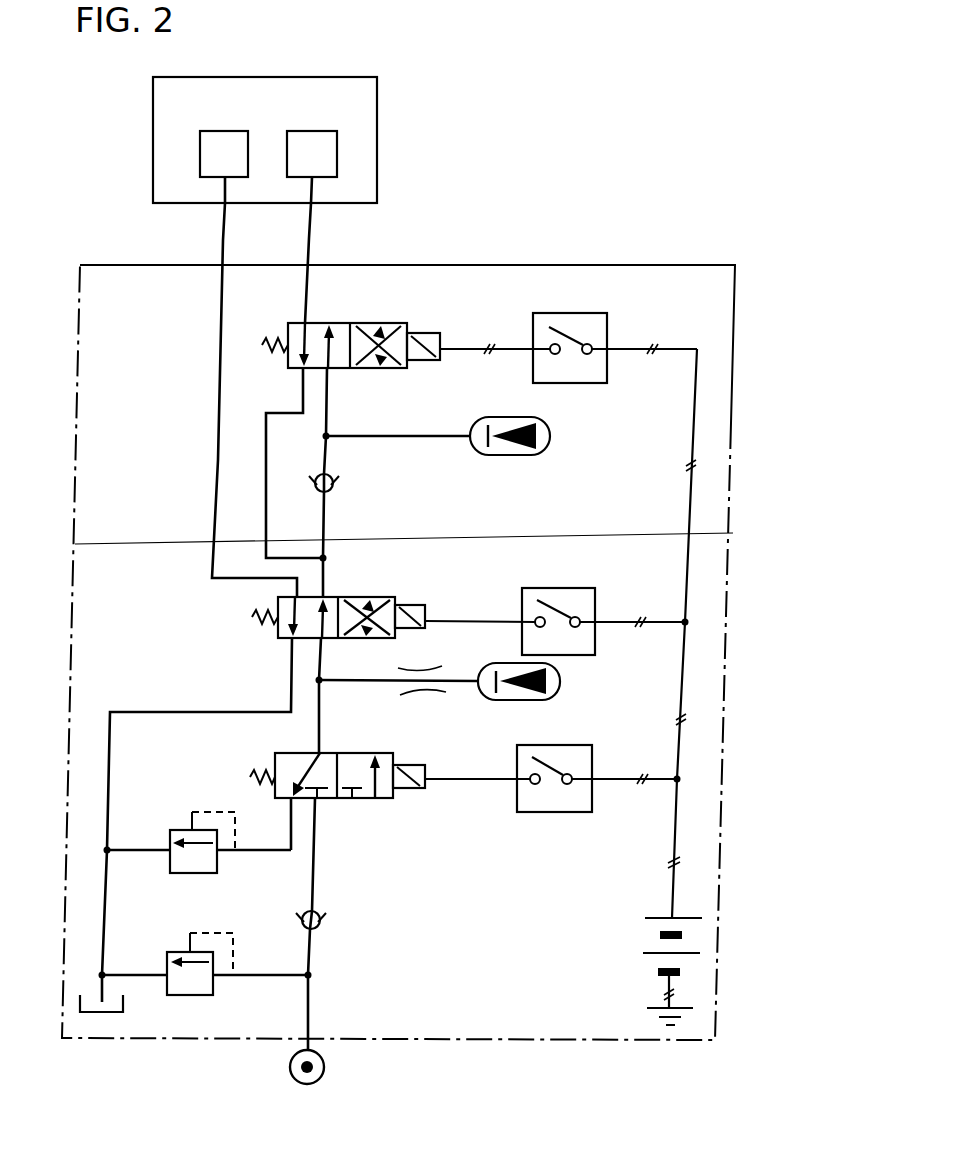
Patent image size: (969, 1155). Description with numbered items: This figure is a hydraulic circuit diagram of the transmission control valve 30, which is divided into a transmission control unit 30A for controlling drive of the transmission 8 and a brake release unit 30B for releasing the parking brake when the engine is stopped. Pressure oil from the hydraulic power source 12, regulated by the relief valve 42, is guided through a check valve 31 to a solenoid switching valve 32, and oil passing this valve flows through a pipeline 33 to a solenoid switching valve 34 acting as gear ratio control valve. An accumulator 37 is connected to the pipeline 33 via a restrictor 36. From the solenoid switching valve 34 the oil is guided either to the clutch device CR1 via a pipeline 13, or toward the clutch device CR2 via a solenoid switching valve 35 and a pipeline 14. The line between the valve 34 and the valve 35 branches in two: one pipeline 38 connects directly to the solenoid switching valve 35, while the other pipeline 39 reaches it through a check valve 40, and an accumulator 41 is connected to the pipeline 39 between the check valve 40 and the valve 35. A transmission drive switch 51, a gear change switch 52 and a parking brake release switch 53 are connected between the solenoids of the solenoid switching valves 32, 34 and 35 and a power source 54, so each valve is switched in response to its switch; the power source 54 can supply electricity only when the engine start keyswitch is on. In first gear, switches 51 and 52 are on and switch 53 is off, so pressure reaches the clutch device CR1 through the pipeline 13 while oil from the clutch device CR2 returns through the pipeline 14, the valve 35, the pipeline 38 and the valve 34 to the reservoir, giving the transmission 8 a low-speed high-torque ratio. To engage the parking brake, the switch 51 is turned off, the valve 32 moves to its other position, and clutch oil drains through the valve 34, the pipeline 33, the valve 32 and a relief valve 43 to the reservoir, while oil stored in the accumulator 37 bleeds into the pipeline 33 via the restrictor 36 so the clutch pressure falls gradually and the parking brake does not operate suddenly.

The transmission 8 is at (377, 105).
The clutch device CR1 is at (200, 152).
The clutch device CR2 is at (325, 153).
The pipeline 13 is at (220, 238).
The pipeline 14 is at (310, 238).
The transmission control valve 30 is at (752, 632).
The transmission control unit 30A is at (718, 862).
The brake release unit 30B is at (731, 425).
The check valve 31 is at (320, 926).
The solenoid switching valve 32 is at (385, 798).
The pipeline 33 is at (323, 696).
The solenoid switching valve (gear ratio control valve) 34 is at (395, 638).
The solenoid switching valve (control valve) 35 is at (407, 368).
The restrictor 36 is at (443, 685).
The accumulator 37 is at (560, 681).
The pipeline 38 is at (266, 507).
The pipeline 39 is at (330, 456).
The check valve 40 is at (333, 490).
The accumulator 41 is at (550, 436).
The relief valve 42 is at (195, 995).
The relief valve 43 is at (193, 873).
The transmission drive switch 51 is at (568, 812).
The gear change switch 52 is at (595, 592).
The parking brake release switch 53 is at (607, 323).
The power source 54 is at (652, 928).
The hydraulic power source 12 is at (324, 1070).